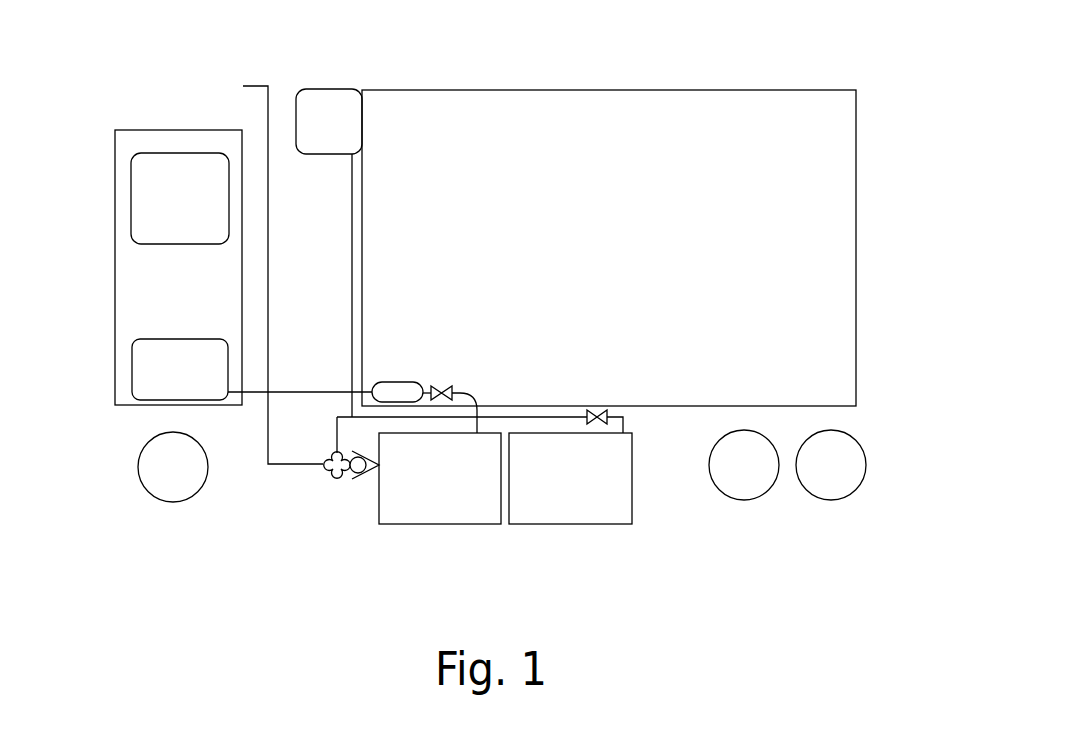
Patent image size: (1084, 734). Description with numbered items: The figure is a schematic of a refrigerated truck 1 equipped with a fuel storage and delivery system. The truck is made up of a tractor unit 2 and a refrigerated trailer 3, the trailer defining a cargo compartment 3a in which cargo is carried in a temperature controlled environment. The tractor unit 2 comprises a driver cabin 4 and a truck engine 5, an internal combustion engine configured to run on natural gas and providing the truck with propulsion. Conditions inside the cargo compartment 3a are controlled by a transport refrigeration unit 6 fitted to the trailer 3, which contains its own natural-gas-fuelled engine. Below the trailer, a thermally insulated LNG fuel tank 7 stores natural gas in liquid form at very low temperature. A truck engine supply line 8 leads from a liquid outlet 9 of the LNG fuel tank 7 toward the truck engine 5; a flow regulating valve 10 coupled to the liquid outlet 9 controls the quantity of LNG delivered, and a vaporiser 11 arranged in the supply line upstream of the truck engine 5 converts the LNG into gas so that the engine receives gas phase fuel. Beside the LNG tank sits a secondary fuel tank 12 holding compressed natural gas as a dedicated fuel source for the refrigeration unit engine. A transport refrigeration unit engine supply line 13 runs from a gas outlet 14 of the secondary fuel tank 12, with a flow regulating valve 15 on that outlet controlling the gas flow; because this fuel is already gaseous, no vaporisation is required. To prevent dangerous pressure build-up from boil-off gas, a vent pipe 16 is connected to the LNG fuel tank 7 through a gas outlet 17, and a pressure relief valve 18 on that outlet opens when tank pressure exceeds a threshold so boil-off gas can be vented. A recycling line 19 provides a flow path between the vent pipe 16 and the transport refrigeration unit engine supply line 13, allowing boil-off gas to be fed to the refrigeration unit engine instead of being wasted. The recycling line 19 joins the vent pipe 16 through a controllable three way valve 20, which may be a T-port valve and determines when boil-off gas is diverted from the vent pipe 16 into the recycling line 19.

The refrigerated truck 1 is at (148, 38).
The tractor unit 2 is at (115, 295).
The refrigerated trailer 3 is at (582, 90).
The cargo compartment 3a is at (697, 164).
The driver cabin 4 is at (150, 185).
The truck engine 5 is at (147, 388).
The transport refrigeration unit 6 is at (318, 89).
The LNG fuel tank 7 is at (462, 525).
The truck engine supply line 8 is at (300, 391).
The liquid outlet 9 is at (480, 437).
The flow regulating valve 10 is at (441, 386).
The vaporiser 11 is at (385, 383).
The secondary fuel tank 12 is at (590, 525).
The transport refrigeration unit engine supply line 13 is at (542, 417).
The gas outlet 14 is at (626, 430).
The flow regulating valve 15 is at (597, 412).
The vent pipe 16 is at (268, 298).
The gas outlet 17 is at (378, 470).
The pressure relief valve 18 is at (340, 478).
The recycling line 19 is at (337, 425).
The three way valve 20 is at (330, 473).